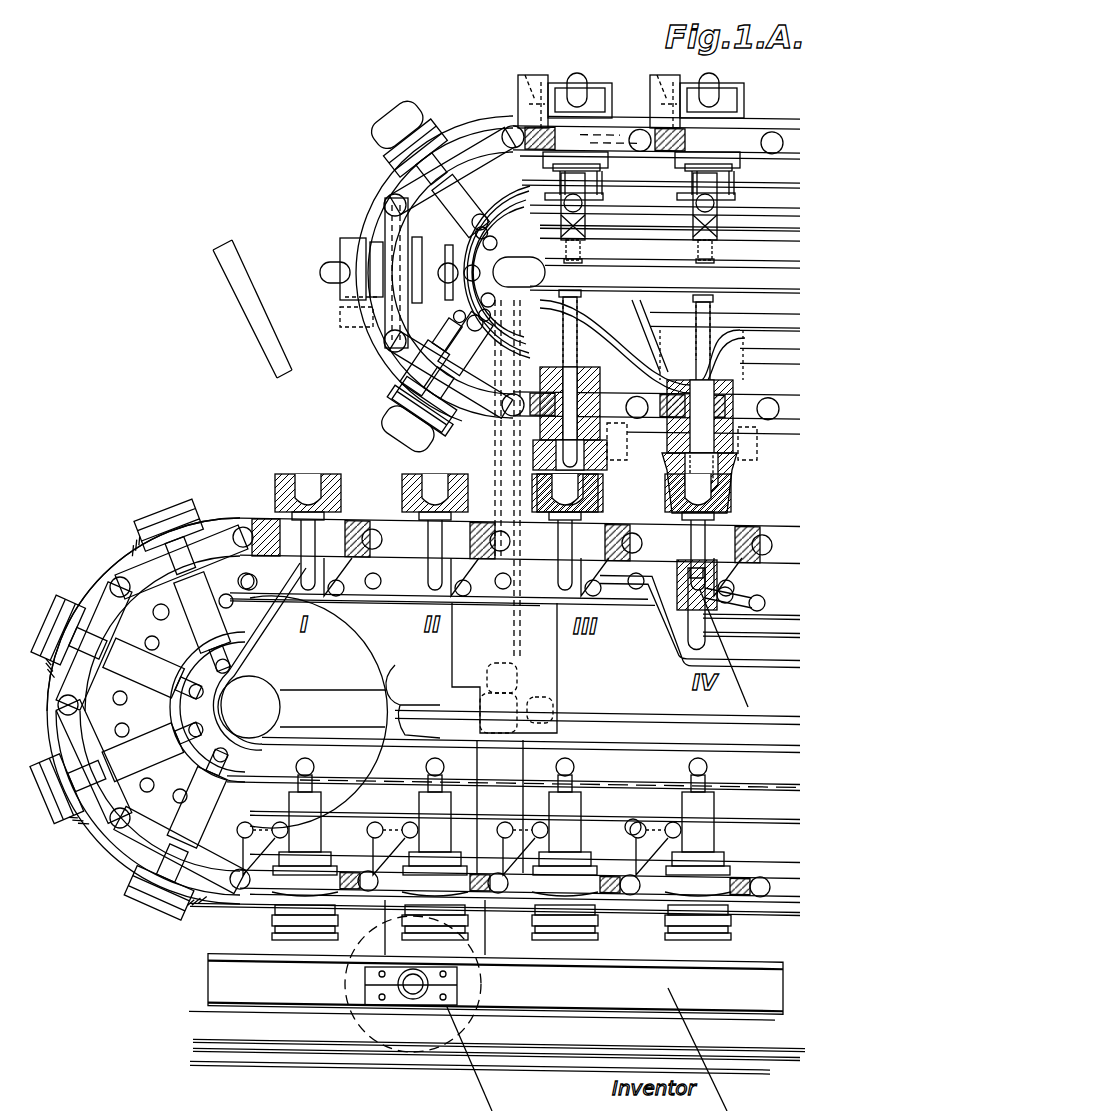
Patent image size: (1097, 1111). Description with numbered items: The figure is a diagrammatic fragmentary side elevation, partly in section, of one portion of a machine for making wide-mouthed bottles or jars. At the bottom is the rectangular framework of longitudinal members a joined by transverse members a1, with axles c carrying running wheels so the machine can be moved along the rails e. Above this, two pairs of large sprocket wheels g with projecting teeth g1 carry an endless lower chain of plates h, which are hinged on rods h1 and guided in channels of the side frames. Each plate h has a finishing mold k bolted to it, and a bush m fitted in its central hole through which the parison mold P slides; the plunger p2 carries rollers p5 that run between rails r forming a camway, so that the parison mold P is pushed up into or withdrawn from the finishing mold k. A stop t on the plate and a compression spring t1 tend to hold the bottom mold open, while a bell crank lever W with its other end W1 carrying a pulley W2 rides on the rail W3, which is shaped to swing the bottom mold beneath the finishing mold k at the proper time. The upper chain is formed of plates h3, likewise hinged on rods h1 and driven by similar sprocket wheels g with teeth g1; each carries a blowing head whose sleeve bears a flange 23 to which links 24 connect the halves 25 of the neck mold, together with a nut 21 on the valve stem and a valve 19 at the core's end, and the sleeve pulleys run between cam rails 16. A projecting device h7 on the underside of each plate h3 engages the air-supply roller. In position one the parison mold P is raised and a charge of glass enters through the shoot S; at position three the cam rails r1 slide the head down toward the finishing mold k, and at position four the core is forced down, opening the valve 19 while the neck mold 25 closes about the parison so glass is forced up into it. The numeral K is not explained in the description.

The plates h3 is at (497, 140).
The sprocket wheels g is at (433, 238).
The flange 23 is at (370, 242).
The shoot S is at (262, 334).
The projecting device h7 is at (360, 328).
The halves of the neck or ring mold 25 is at (398, 397).
The cam rails r1 is at (662, 340).
The cam rails 16 is at (782, 362).
The nut 21 is at (715, 296).
The links 24 is at (465, 420).
The hatched block K is at (667, 468).
The valve 19 is at (716, 486).
The finishing molds k is at (168, 502).
The compression spring t1 is at (272, 518).
The stop t is at (280, 522).
The plates h is at (137, 556).
The rods h1 is at (112, 597).
The parison mold P is at (211, 619).
The plunger p2 is at (452, 597).
The pulleys or rollers p5 is at (563, 603).
The rails r is at (670, 653).
The projecting teeth g1 is at (392, 682).
The bush m is at (196, 890).
The bell crank lever W is at (672, 846).
The other end of bell crank lever W1 is at (647, 820).
The pulley W2 is at (633, 818).
The rail W3 is at (763, 640).
The longitudinal members a is at (486, 986).
The rails e is at (528, 1065).
The axles c is at (411, 990).
The transverse members a1 is at (445, 990).